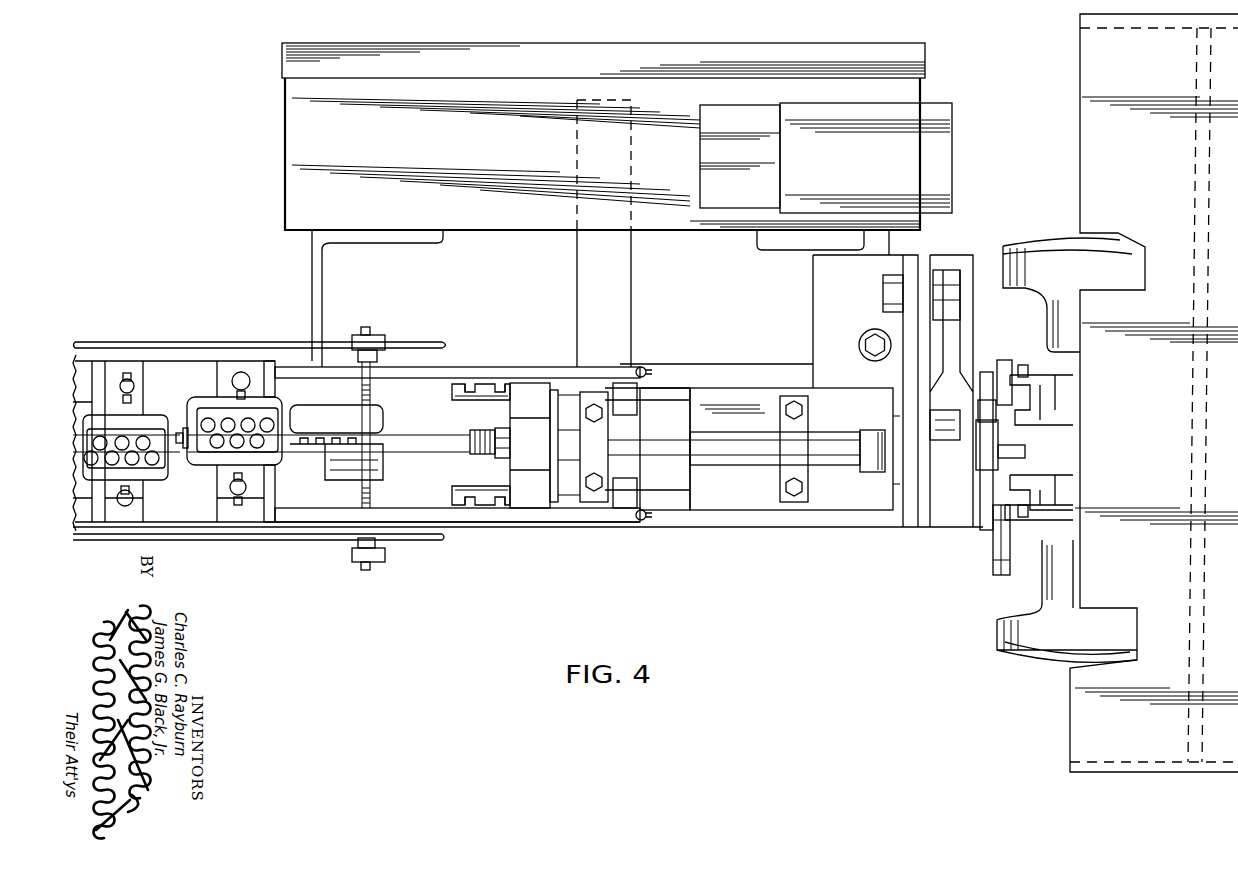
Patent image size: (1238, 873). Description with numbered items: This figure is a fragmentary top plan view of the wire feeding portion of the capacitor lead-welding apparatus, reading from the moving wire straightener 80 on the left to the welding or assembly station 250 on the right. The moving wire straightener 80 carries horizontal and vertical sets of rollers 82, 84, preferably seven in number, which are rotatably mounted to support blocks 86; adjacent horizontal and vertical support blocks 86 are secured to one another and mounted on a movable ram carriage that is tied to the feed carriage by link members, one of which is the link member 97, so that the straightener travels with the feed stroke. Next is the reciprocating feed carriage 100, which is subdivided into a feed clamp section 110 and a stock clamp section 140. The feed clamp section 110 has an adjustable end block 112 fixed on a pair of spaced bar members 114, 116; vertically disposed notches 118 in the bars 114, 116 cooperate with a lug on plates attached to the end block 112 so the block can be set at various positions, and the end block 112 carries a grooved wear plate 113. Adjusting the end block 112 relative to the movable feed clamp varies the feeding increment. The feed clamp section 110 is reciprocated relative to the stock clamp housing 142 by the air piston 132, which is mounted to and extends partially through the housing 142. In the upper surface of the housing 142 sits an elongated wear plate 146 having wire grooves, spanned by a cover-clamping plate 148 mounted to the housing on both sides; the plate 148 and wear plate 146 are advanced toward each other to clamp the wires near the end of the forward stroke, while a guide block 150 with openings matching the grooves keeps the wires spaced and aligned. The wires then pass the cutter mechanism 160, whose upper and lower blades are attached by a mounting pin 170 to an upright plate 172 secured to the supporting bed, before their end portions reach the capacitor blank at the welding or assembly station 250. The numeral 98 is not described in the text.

The moving wire straightener 80 is at (187, 362).
The horizontal rollers 82 is at (142, 440).
The vertical rollers 84 is at (318, 440).
The support blocks 86 is at (120, 420).
The link member 97 is at (433, 366).
The lower guide rod 98 is at (470, 515).
The reciprocating feed carriage 100 is at (618, 553).
The feed clamp section 110 is at (540, 550).
The adjustable end block 112 is at (522, 396).
The wear plate 113 is at (538, 425).
The bar member 114 is at (452, 497).
The bar member 116 is at (470, 394).
The notches 118 is at (497, 383).
The air piston 132 is at (655, 452).
The stock clamp section 140 is at (781, 542).
The stock clamp housing 142 is at (700, 512).
The elongated wear plate 146 is at (742, 466).
The cover-clamping plate 148 is at (794, 463).
The guide block 150 is at (870, 463).
The cutter mechanism 160 is at (983, 350).
The mounting pin 170 is at (880, 298).
The upright plate 172 is at (920, 268).
The welding or assembly station 250 is at (1050, 457).